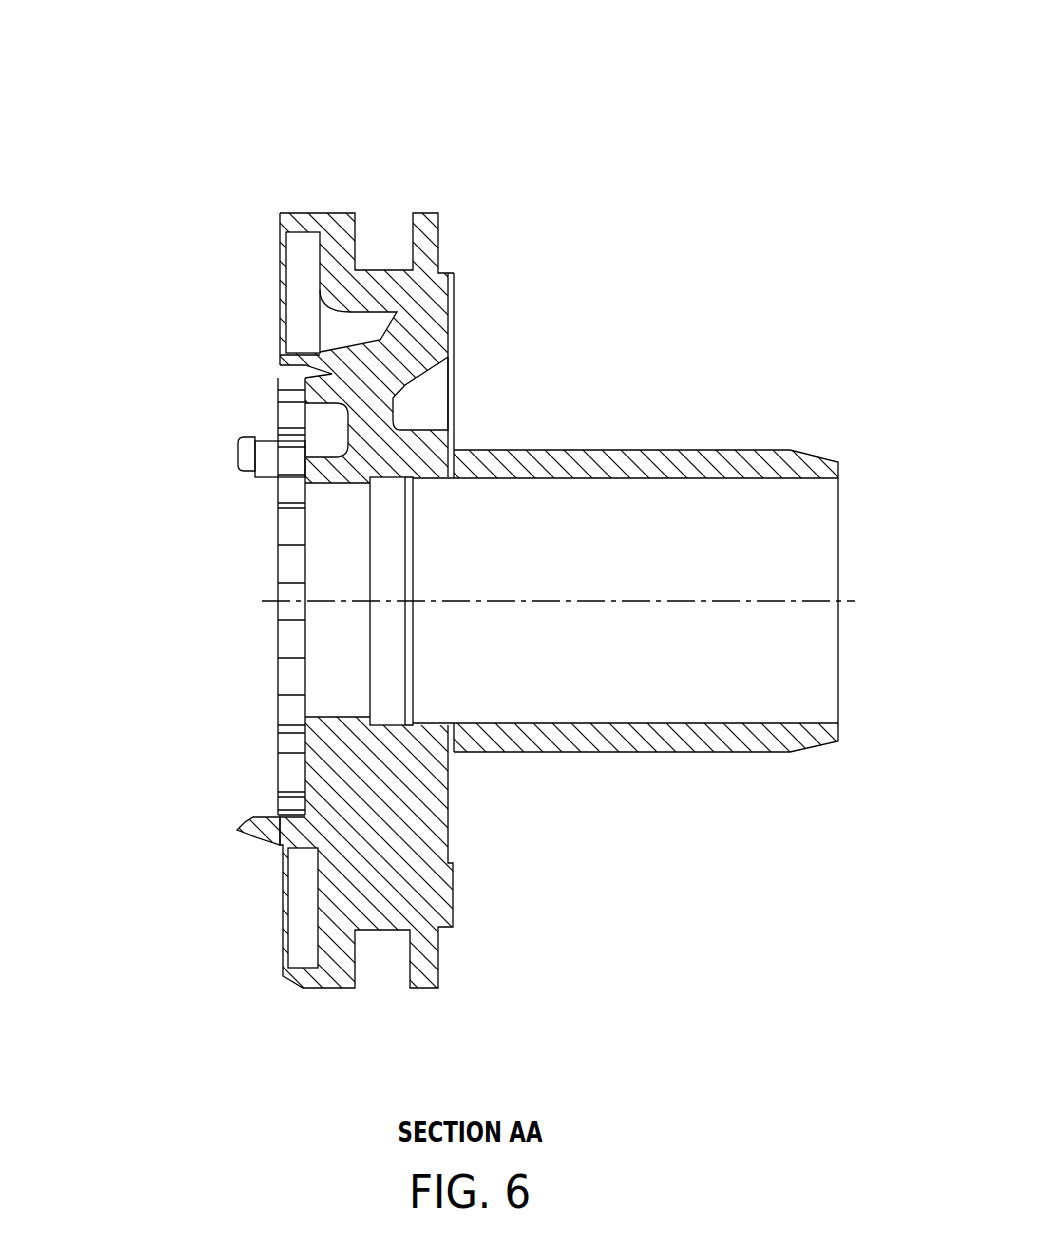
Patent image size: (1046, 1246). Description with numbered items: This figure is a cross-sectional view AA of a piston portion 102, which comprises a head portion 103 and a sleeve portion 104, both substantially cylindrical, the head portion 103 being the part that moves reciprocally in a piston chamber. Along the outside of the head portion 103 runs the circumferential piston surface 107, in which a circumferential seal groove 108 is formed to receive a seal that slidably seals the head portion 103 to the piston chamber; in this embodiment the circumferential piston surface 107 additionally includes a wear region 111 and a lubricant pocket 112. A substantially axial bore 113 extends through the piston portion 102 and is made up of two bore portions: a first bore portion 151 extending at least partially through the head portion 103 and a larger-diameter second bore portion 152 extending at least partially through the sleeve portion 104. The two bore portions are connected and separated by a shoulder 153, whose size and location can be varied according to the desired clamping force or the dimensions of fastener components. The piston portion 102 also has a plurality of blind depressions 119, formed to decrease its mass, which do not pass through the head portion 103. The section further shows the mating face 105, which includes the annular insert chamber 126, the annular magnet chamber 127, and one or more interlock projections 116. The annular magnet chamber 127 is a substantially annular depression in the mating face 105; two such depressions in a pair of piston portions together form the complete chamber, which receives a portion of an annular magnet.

The piston portion 102 is at (735, 1000).
The head portion 103 is at (455, 212).
The sleeve portion 104 is at (455, 438).
The mating face 105 is at (258, 212).
The circumferential piston surface 107 is at (357, 193).
The circumferential seal groove 108 is at (412, 193).
The wear region 111 is at (354, 1003).
The lubricant pocket 112 is at (297, 1003).
The axial bore 113 is at (855, 723).
The interlock projections 116 is at (248, 475).
The blind depressions 119 is at (320, 425).
The annular insert chamber 126 is at (277, 382).
The annular magnet chamber 127 is at (300, 284).
The first bore portion 151 is at (338, 715).
The second bore portion 152 is at (742, 720).
The shoulder 153 is at (378, 723).